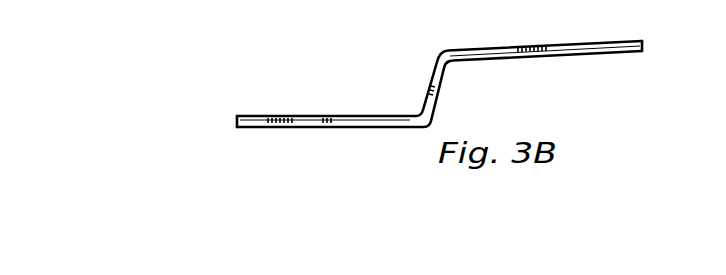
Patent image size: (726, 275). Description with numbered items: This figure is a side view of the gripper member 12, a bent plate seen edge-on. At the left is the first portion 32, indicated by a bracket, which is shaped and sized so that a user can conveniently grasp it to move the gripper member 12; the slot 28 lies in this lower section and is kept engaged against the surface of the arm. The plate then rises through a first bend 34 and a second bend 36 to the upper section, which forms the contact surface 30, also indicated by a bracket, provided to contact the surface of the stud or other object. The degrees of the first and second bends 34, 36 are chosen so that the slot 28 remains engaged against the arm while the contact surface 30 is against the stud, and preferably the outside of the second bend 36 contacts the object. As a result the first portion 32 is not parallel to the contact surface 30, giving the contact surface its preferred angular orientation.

The gripper member 12 is at (632, 52).
The slot 28 is at (338, 124).
The contact surface 30 is at (633, 28).
The first portion 32 is at (415, 108).
The first bend 34 is at (417, 105).
The second bend 36 is at (452, 66).